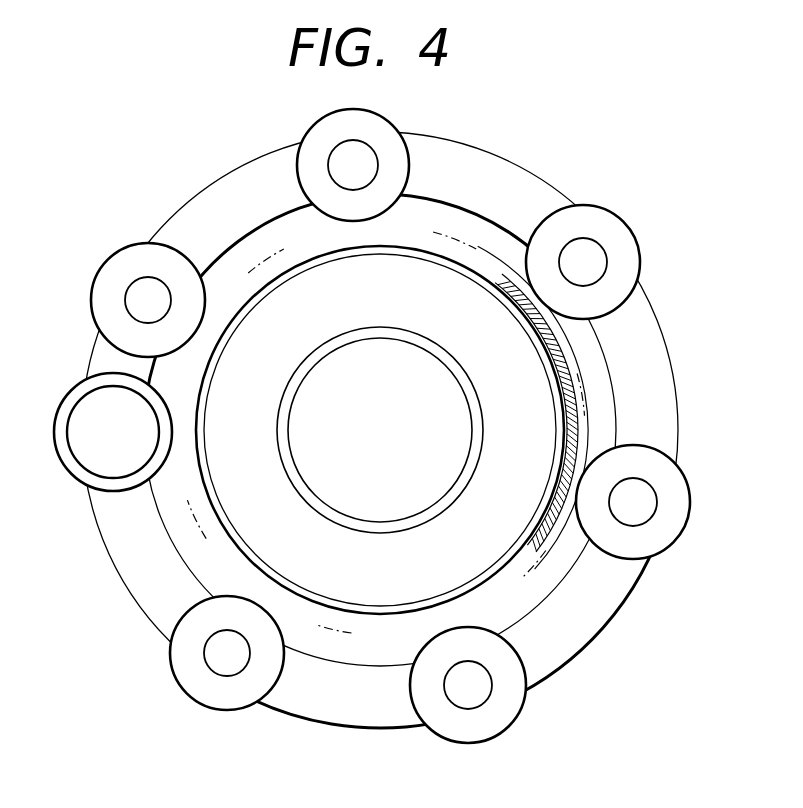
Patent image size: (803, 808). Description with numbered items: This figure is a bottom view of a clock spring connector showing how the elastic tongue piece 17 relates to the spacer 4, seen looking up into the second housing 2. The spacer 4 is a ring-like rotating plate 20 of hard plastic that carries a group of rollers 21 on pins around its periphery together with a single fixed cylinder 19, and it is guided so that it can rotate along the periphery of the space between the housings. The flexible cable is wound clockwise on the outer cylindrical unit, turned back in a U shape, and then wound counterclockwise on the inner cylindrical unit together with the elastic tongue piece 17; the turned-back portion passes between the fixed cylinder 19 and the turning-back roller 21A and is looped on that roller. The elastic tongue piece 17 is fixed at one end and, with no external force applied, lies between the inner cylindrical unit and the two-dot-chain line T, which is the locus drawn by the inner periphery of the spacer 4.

The second housing 2 is at (493, 542).
The spacer 4 is at (562, 183).
The elastic tongue piece 17 is at (578, 410).
The fixed cylinder 19 is at (72, 398).
The rotating plate 20 is at (486, 166).
The rollers 21 is at (665, 537).
The turning-back roller 21A is at (124, 266).
The two-dot-chain line (locus of spacer inner periphery) T is at (185, 503).